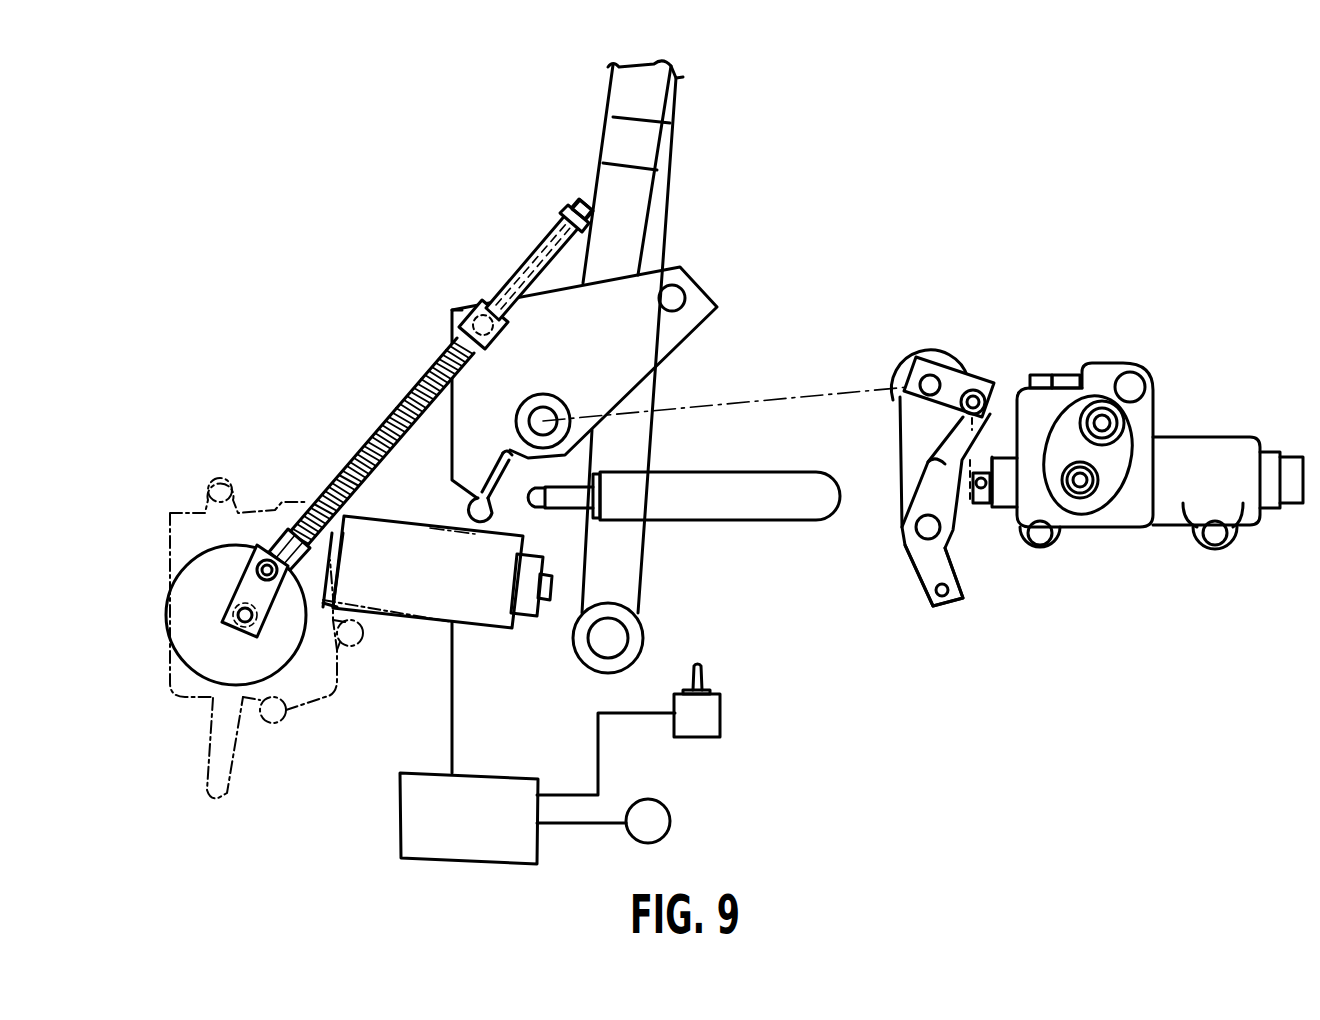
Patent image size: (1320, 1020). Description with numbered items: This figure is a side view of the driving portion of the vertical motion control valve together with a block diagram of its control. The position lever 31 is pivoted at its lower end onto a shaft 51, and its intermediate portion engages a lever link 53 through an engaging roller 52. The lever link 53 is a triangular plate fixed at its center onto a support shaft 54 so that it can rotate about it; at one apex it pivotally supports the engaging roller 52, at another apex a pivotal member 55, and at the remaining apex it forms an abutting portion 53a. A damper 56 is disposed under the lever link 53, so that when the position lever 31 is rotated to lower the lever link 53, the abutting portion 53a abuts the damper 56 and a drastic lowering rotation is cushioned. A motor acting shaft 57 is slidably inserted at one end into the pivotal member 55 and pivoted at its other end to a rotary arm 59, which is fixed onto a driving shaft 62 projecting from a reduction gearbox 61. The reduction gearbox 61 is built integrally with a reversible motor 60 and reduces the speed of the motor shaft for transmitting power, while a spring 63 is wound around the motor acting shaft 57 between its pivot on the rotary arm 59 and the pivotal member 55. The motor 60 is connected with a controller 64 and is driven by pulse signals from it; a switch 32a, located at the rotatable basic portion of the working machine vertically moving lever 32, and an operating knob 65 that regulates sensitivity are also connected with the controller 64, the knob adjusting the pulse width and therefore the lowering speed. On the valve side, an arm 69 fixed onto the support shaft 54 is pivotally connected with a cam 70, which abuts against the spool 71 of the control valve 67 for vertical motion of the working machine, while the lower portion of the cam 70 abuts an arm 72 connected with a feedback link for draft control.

The position lever 31 is at (662, 205).
The working machine vertically moving lever 32 is at (707, 670).
The switch 32a is at (722, 707).
The shaft 51 is at (612, 633).
The engaging roller 52 is at (698, 296).
The lever link 53 is at (695, 330).
The abutting portion 53a is at (470, 510).
The support shaft 54 is at (540, 396).
The pivotal member 55 is at (468, 306).
The damper 56 is at (752, 522).
The motor acting shaft 57 is at (537, 250).
The rotary arm 59 is at (288, 714).
The motor 60 is at (398, 613).
The reduction gearbox 61 is at (212, 700).
The driving shaft 62 is at (175, 632).
The spring 63 is at (395, 402).
The controller 64 is at (400, 800).
The operating knob 65 is at (672, 812).
The control valve 67 is at (1163, 430).
The arm 69 is at (978, 382).
The cam 70 is at (987, 398).
The spool 71 is at (984, 527).
The arm 72 is at (927, 577).